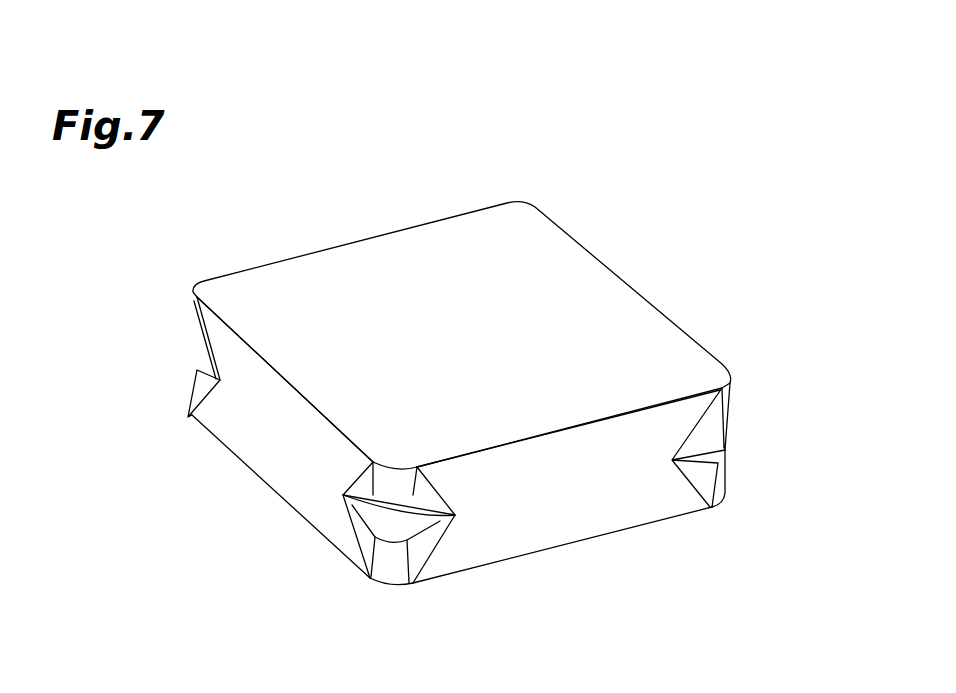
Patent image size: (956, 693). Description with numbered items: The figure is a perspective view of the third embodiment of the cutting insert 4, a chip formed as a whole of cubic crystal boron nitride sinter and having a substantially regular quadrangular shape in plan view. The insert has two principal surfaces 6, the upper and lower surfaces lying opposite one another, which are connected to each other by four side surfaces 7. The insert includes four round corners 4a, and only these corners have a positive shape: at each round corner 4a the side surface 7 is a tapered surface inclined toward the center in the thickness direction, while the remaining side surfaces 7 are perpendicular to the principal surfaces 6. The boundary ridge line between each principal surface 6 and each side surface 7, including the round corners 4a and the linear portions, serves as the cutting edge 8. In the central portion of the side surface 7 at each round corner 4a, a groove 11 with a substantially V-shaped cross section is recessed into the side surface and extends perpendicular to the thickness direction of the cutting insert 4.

The cutting insert 4 is at (446, 389).
The round corners 4a is at (197, 318).
The principal surfaces 6 is at (600, 284).
The side surfaces 7 is at (235, 432).
The cutting edge 8 is at (540, 435).
The groove 11 is at (205, 367).